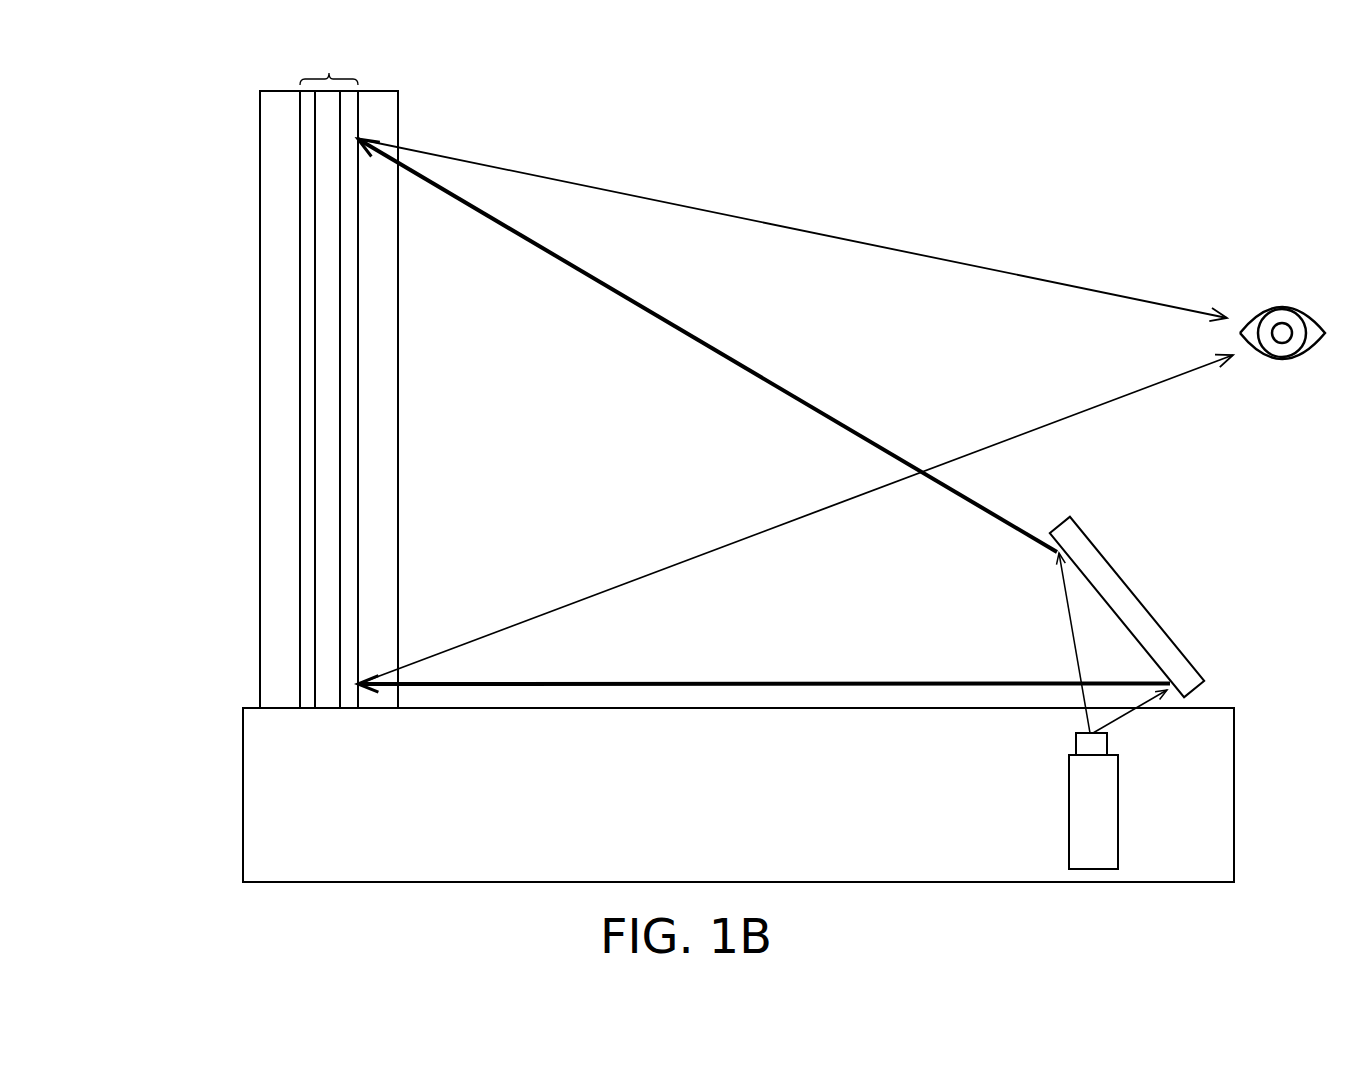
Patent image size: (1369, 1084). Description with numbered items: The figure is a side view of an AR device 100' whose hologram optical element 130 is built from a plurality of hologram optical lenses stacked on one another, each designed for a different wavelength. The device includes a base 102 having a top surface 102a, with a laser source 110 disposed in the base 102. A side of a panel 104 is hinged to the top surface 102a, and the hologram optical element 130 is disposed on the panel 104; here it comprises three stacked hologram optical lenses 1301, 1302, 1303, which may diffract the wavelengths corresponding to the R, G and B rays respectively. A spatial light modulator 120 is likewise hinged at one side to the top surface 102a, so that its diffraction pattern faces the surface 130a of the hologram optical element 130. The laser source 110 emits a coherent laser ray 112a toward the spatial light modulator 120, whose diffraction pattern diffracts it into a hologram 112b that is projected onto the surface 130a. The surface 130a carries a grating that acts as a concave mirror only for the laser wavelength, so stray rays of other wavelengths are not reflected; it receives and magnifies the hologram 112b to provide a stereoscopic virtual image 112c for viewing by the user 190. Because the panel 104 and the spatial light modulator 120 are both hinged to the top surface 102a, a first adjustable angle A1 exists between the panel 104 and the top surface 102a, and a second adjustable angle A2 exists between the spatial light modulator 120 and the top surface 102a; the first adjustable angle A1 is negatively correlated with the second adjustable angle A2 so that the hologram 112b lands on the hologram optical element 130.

The AR device 100' is at (105, 890).
The base 102 is at (370, 905).
The top surface 102a is at (245, 708).
The panel 104 is at (232, 163).
The laser source 110 is at (1118, 835).
The coherent laser ray 112a is at (1062, 593).
The hologram 112b is at (790, 390).
The stereoscopic virtual image 112c is at (1005, 270).
The spatial light modulator 120 is at (1132, 588).
The hologram optical element 130 is at (329, 61).
The surface 130a is at (360, 263).
The hologram optical lens 1301 is at (307, 142).
The hologram optical lens 1302 is at (327, 108).
The hologram optical lens 1303 is at (350, 113).
The user 190 is at (1280, 307).
The first adjustable angle A1 is at (417, 637).
The second adjustable angle A2 is at (1143, 672).